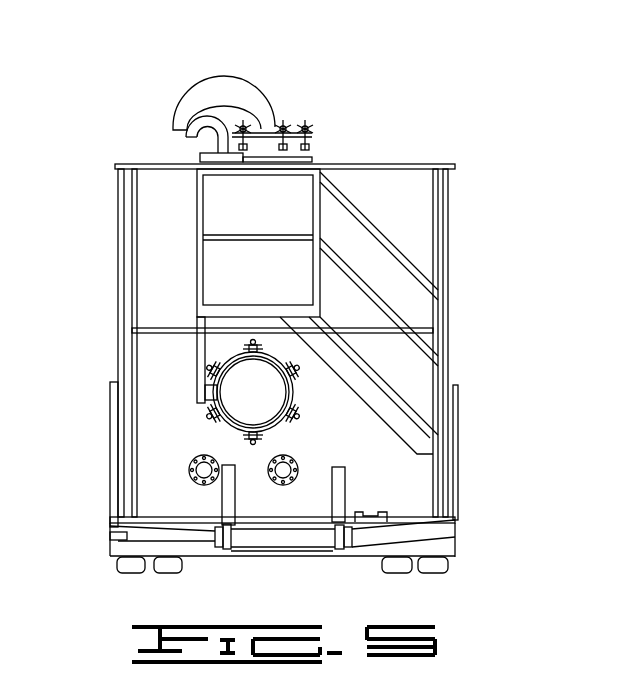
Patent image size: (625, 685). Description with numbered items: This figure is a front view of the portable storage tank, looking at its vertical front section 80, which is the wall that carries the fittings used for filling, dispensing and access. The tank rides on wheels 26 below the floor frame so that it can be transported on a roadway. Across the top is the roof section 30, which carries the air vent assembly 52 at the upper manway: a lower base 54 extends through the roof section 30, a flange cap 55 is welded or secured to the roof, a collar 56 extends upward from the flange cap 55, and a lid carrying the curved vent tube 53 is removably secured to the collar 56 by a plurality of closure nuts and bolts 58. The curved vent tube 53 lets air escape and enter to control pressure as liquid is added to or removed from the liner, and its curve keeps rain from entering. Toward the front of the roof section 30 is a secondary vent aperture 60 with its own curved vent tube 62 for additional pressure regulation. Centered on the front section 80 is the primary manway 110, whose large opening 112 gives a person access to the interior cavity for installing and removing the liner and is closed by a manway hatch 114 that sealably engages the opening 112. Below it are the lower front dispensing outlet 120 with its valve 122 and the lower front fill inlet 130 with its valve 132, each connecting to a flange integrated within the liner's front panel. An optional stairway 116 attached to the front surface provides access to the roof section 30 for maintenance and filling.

The wheels 26 is at (447, 572).
The roof section 30 is at (432, 165).
The air vent assembly 52 is at (333, 94).
The curved vent tube 53 is at (210, 80).
The lower base 54 is at (270, 158).
The flange cap 55 is at (262, 153).
The collar 56 is at (290, 133).
The closure nuts and bolts 58 is at (305, 128).
The secondary vent aperture 60 is at (203, 155).
The curved vent tube 62 is at (193, 121).
The vertical front section 80 is at (407, 218).
The primary manway 110 is at (223, 427).
The large opening 112 is at (228, 382).
The manway hatch 114 is at (280, 398).
The stairway 116 is at (393, 390).
The lower front dispensing outlet 120 is at (190, 473).
The valve 122 is at (202, 468).
The lower front fill inlet 130 is at (272, 480).
The valve 132 is at (285, 480).